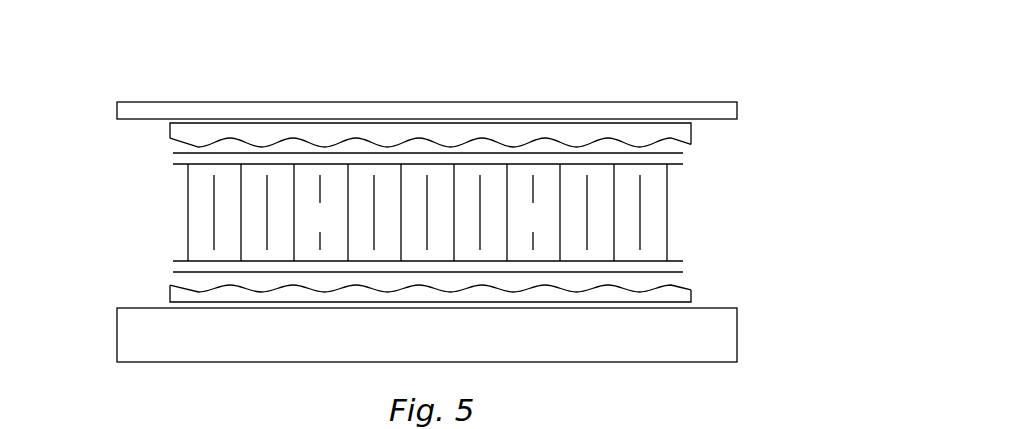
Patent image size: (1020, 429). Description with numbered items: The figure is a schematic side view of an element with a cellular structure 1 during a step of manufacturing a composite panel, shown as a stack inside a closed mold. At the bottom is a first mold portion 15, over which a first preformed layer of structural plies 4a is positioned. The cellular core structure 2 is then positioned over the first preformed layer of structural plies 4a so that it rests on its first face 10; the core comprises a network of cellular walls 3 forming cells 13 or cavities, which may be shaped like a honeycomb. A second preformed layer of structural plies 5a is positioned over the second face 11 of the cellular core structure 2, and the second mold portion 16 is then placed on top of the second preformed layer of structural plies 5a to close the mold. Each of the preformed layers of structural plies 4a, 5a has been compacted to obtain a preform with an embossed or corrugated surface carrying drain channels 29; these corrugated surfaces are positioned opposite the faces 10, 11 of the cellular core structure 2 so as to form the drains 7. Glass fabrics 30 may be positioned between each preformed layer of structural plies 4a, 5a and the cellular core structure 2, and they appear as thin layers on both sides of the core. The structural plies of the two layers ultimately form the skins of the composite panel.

The element with a cellular structure 1 is at (116, 165).
The cellular core structure 2 is at (680, 215).
The cellular walls 3 is at (187, 210).
The first preformed layer of structural plies 4a is at (704, 293).
The second preformed layer of structural plies 5a is at (704, 142).
The drains 7 is at (289, 155).
The first face 10 is at (321, 297).
The second face 11 is at (355, 133).
The cells 13 is at (405, 168).
The first mold portion 15 is at (746, 336).
The second mold portion 16 is at (746, 110).
The drain channels 29 is at (223, 276).
The glass fabrics 30 is at (700, 160).